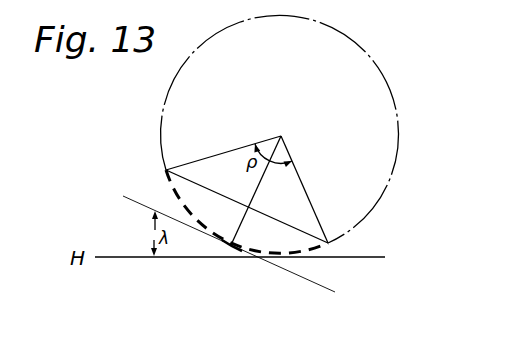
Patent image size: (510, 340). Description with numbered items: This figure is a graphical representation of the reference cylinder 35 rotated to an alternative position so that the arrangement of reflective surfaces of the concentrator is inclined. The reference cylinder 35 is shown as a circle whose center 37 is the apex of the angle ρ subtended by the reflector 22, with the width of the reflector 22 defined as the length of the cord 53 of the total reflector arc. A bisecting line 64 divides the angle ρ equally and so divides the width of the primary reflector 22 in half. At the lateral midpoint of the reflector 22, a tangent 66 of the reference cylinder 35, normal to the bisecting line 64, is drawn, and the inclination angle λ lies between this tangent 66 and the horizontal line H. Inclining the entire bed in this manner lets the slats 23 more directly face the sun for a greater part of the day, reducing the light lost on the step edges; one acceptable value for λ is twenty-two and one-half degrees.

The reference cylinder 35 is at (395, 103).
The wheel center / apex 37 is at (283, 136).
The reflector 22 is at (227, 225).
The slats 23 is at (258, 256).
The cord 53 is at (225, 196).
The bisecting line 64 is at (254, 198).
The tangent 66 is at (135, 201).